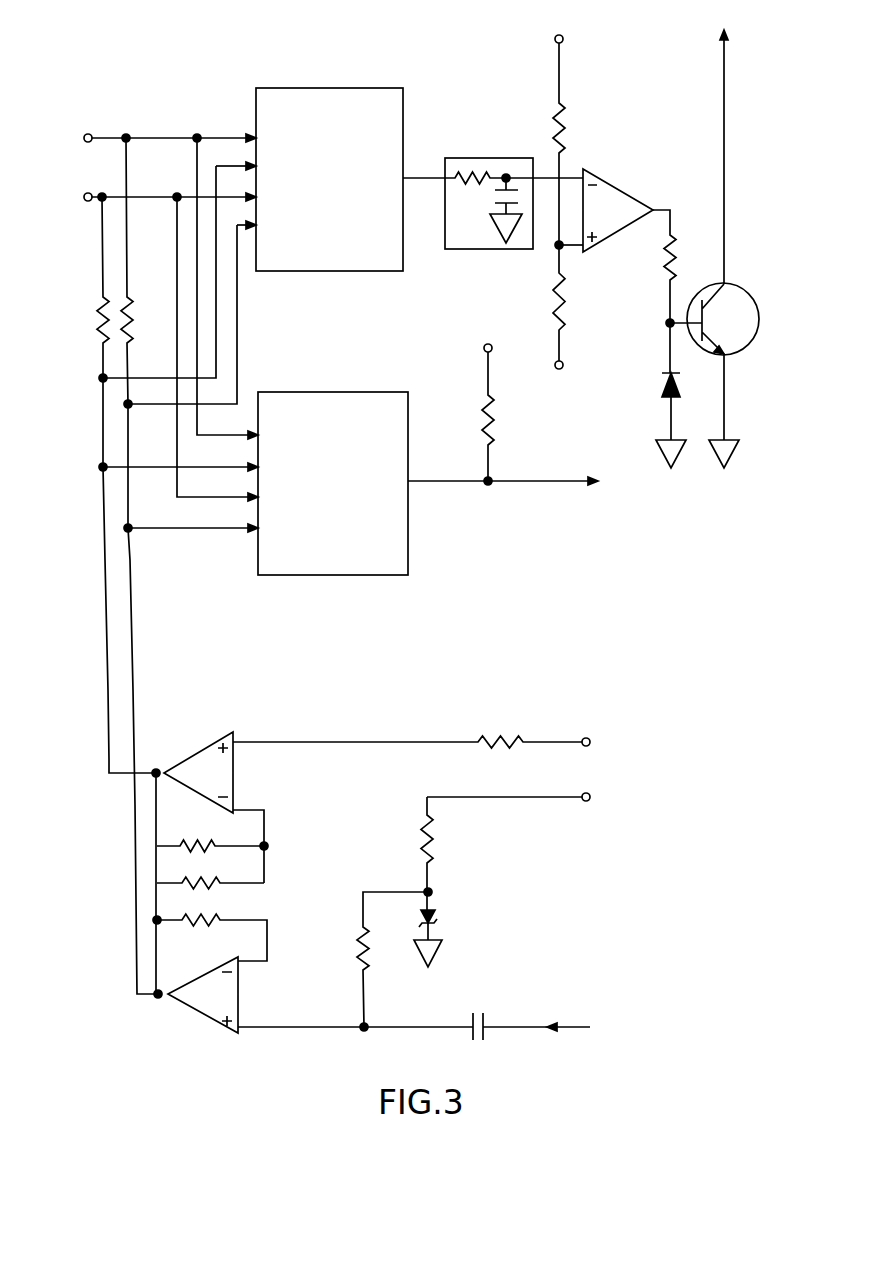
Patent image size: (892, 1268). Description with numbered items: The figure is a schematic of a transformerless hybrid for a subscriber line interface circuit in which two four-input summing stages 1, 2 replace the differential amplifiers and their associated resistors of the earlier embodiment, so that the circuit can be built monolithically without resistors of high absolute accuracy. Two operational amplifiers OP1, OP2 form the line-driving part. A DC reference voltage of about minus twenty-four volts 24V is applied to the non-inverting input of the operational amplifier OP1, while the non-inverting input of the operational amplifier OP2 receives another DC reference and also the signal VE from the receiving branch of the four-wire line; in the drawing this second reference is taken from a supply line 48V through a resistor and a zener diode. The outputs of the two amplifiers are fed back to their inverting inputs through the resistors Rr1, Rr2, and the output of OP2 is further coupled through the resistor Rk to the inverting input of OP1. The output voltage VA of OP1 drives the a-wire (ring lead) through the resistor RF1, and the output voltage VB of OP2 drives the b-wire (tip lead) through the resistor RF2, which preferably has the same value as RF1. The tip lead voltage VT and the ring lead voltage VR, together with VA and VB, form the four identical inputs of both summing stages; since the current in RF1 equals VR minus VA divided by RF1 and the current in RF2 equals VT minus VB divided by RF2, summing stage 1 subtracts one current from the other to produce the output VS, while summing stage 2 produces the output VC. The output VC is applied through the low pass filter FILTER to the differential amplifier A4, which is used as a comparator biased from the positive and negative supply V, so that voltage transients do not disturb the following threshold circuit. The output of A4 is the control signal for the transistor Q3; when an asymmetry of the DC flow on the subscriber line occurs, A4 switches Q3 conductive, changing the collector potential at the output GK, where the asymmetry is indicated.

The summing stage 2 is at (329, 179).
The summing stage 1 is at (333, 483).
The tip lead voltage VT is at (121, 127).
The ring lead voltage VR is at (93, 210).
The resistor RF1 is at (97, 292).
The resistor RF2 is at (138, 299).
The low pass filter FILTER is at (510, 156).
The output voltage VC is at (437, 195).
The supply voltage divider +V/- V is at (564, 202).
The fourth differential amplifier A4 is at (607, 183).
The transistor Q3 is at (727, 284).
The output GK is at (725, 145).
The output voltage VS is at (516, 417).
The operational amplifier OP1 is at (214, 735).
The DC reference voltage 24V is at (436, 741).
The feedback resistor Rr1 is at (214, 823).
The resistor Rk is at (210, 862).
The feedback resistor Rr2 is at (223, 908).
The output voltage VA is at (109, 760).
The output voltage VB is at (135, 805).
The operational amplifier OP2 is at (196, 1010).
The receive signal VE is at (429, 1026).
The -48V supply with zener reference 48V is at (498, 906).